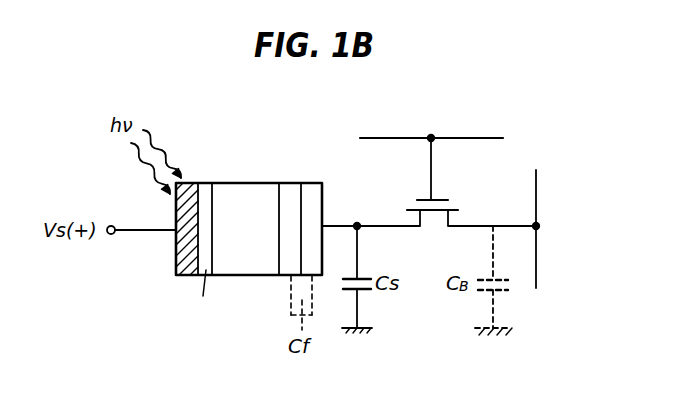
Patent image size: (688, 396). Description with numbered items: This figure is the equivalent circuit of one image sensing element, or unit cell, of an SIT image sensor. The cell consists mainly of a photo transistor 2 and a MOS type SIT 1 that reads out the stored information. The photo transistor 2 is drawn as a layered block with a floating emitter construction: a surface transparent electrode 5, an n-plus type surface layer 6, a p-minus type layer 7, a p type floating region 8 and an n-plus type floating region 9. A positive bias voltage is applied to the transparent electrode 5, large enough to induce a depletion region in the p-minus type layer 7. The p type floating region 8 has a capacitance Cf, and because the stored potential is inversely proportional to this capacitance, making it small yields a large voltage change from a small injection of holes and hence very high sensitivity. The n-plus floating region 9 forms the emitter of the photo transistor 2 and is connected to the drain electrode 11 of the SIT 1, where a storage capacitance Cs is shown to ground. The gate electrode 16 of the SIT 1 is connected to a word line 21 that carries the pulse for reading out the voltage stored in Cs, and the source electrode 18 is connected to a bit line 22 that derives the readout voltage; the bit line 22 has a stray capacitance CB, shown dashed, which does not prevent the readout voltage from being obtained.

The MOS type SIT 1 is at (434, 229).
The photo transistor 2 is at (243, 279).
The surface transparent electrode 5 is at (176, 262).
The n+ type surface layer 6 is at (207, 188).
The p− type layer 7 is at (243, 188).
The p type floating region 8 is at (292, 188).
The n+ type floating region 9 is at (314, 200).
The drain electrode 11 is at (383, 225).
The gate electrode 16 is at (431, 167).
The source electrode 18 is at (470, 225).
The word line 21 is at (484, 138).
The bit line 22 is at (539, 195).